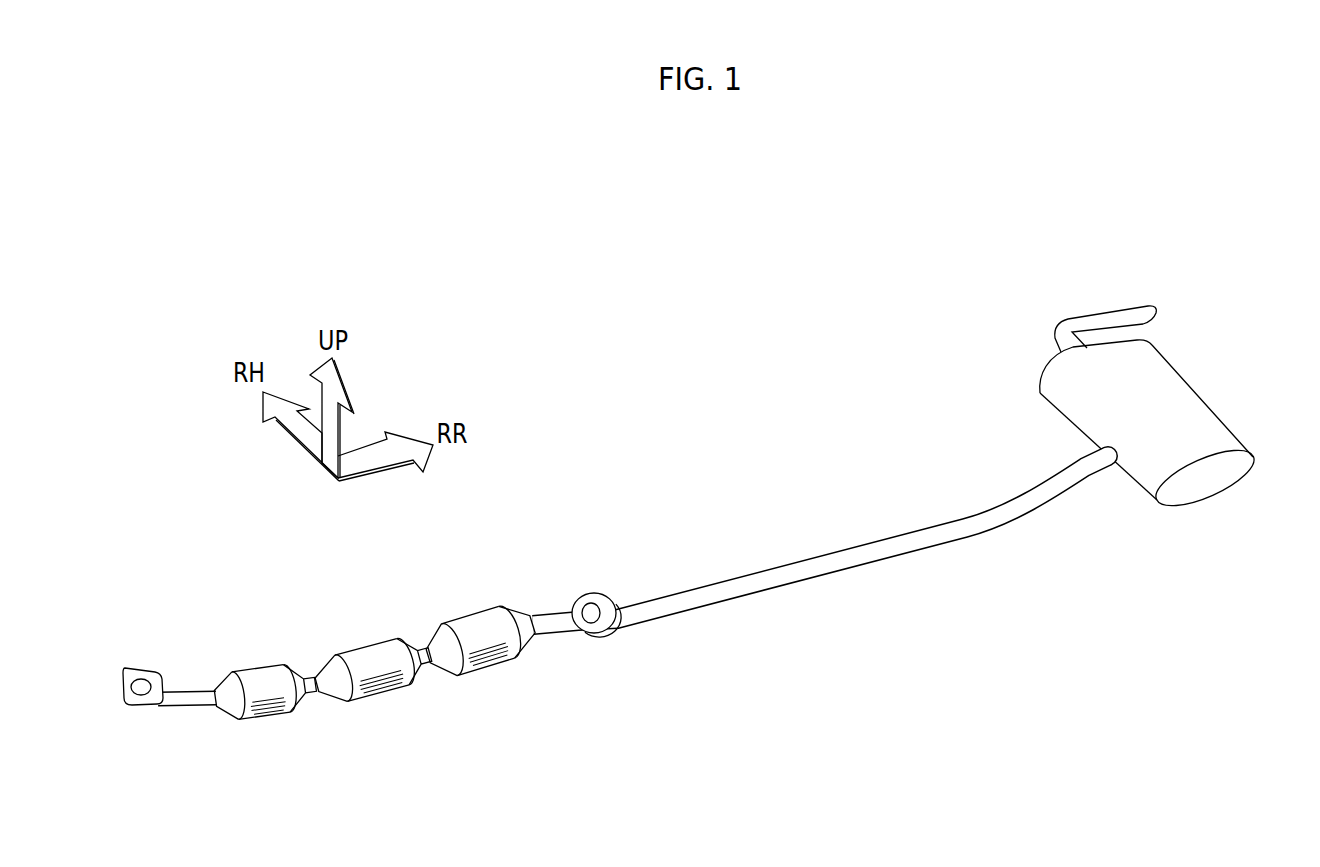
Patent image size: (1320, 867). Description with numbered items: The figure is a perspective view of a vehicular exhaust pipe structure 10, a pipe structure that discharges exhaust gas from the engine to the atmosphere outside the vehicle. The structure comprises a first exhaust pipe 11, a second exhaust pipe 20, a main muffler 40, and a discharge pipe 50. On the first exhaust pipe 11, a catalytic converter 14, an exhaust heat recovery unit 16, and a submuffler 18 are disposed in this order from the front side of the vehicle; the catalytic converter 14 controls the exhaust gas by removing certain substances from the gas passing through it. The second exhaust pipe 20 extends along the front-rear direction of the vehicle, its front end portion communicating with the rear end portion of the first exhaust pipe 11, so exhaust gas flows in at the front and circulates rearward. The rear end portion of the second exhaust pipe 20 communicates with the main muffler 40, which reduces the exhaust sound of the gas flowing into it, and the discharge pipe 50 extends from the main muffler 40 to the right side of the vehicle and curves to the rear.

The vehicular exhaust pipe structure 10 is at (1177, 222).
The first exhaust pipe 11 is at (195, 714).
The catalytic converter 14 is at (263, 717).
The exhaust heat recovery unit 16 is at (372, 698).
The submuffler 18 is at (488, 673).
The second exhaust pipe 20 is at (832, 580).
The main muffler 40 is at (1228, 479).
The discharge pipe 50 is at (1100, 312).